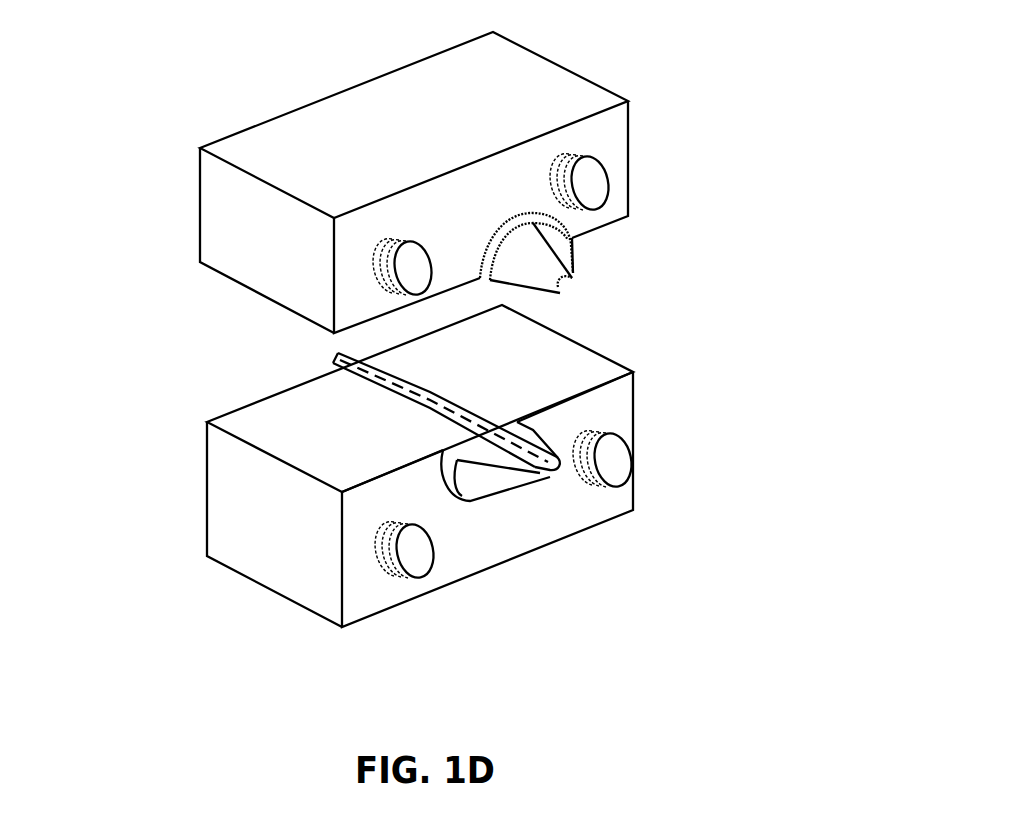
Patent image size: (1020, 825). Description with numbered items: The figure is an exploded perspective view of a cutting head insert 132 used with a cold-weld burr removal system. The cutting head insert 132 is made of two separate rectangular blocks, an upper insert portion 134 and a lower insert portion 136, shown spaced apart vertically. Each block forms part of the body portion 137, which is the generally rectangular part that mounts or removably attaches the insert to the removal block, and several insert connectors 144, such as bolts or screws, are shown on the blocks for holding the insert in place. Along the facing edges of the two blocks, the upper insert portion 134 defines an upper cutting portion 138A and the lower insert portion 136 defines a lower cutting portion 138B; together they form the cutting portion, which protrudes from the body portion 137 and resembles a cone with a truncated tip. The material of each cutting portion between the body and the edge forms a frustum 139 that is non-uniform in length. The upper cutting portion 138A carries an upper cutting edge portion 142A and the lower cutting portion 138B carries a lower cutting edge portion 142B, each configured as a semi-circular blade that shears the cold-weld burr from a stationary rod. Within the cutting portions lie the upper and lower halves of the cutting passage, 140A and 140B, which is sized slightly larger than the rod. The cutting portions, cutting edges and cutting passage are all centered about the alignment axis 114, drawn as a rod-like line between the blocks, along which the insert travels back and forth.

The cutting head insert 132 is at (436, 347).
The upper insert portion 134 is at (424, 346).
The lower insert portion 136 is at (375, 466).
The body portion 137 is at (201, 404).
The insert connector 144 is at (440, 397).
The upper cutting portion 138A is at (624, 429).
The lower cutting portion 138B is at (424, 525).
The frustum 139 is at (620, 431).
The upper cutting edge portion 142A is at (675, 257).
The lower cutting edge portion 142B is at (632, 512).
The upper cutting passage portion 140A is at (674, 298).
The lower cutting passage portion 140B is at (268, 392).
The alignment axis 114 is at (352, 389).